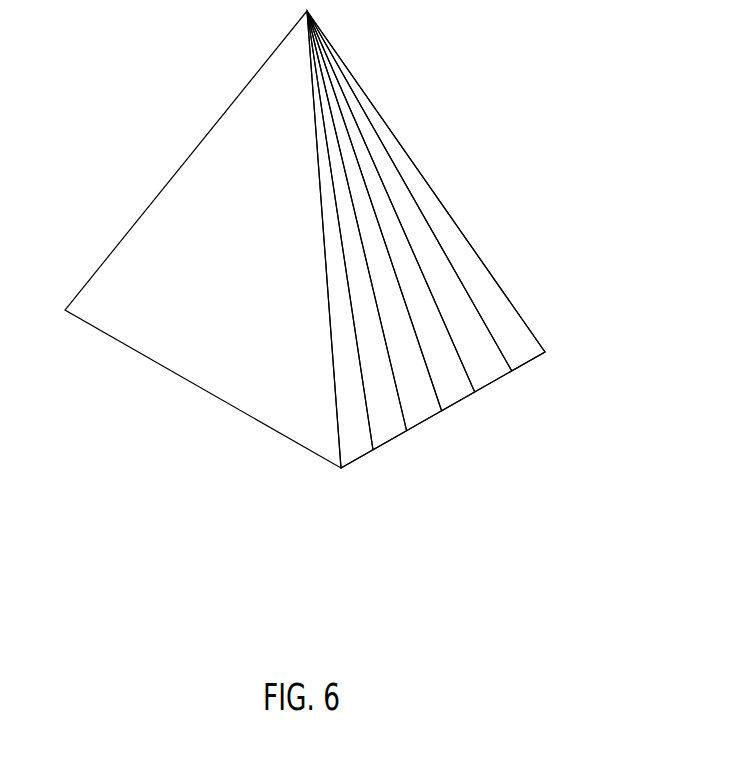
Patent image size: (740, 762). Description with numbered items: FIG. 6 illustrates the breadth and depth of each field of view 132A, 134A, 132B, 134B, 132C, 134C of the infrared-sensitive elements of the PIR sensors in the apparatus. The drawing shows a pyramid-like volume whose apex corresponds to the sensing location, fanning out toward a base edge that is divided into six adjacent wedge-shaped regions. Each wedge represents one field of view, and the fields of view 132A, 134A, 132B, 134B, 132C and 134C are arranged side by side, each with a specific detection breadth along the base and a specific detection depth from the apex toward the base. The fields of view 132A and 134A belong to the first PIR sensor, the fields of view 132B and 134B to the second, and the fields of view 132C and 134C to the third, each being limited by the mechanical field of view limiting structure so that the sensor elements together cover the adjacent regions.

The field of view 132A is at (353, 452).
The field of view 134A is at (392, 431).
The field of view 132B is at (424, 412).
The field of view 134B is at (456, 392).
The field of view 132C is at (491, 372).
The field of view 134C is at (523, 350).